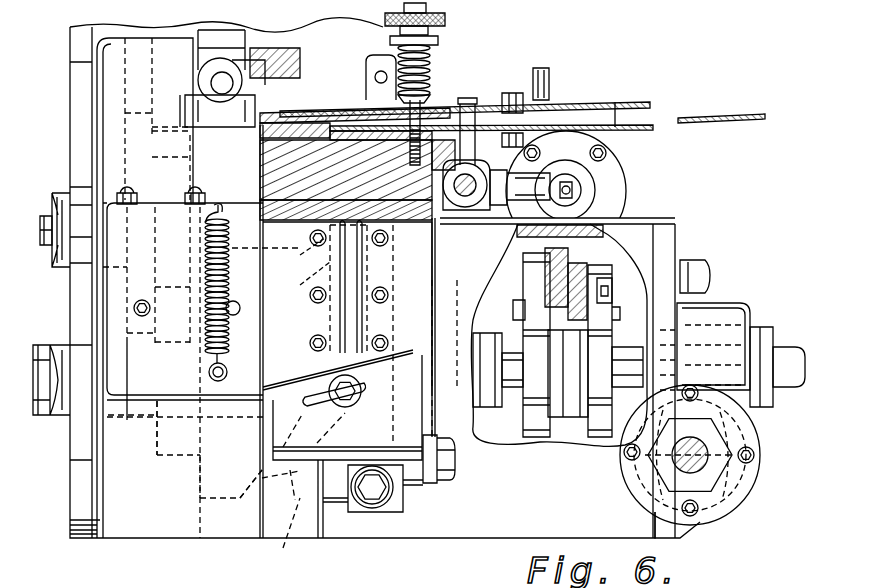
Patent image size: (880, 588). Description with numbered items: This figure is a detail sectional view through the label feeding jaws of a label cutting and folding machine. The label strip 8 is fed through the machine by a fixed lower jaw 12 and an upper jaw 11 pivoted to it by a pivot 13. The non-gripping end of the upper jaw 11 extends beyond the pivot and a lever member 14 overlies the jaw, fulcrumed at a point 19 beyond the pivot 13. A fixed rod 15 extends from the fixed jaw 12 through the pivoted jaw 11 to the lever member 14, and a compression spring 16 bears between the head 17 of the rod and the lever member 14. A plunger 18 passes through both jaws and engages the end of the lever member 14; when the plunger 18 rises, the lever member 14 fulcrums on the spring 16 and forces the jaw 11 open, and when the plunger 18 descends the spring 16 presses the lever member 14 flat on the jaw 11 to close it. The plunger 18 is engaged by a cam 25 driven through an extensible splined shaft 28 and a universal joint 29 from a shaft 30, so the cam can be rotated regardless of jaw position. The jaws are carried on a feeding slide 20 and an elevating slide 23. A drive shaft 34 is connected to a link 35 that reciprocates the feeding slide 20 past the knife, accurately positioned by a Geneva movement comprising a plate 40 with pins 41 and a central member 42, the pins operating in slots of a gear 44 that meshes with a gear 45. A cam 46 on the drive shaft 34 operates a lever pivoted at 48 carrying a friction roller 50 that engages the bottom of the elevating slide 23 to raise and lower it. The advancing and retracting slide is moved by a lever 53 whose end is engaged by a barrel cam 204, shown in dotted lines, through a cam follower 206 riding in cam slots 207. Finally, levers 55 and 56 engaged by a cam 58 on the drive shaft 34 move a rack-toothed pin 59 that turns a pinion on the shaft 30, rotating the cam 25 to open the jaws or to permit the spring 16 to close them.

The label strip 8 is at (725, 114).
The upper jaw 11 is at (640, 102).
The fixed lower jaw 12 is at (648, 131).
The pivot 13 is at (272, 148).
The lever member 14 is at (322, 114).
The fixed rod 15 is at (420, 122).
The compression spring 16 is at (433, 72).
The head 17 is at (447, 20).
The plunger 18 is at (478, 108).
The fulcrum point 19 is at (276, 90).
The feeding slide 20 is at (347, 306).
The elevating slide 23 is at (420, 266).
The cam 25 is at (505, 240).
The shaft 28 is at (530, 187).
The universal joint 29 is at (582, 203).
The shaft 30 is at (572, 188).
The drive shaft 34 is at (787, 355).
The link 35 is at (383, 72).
The plate 40 is at (205, 500).
The pins 41 is at (177, 335).
The central member 42 is at (160, 462).
The gear 44 is at (133, 350).
The gear 45 is at (152, 45).
The cam 46 is at (455, 427).
The pivot 48 is at (444, 473).
The friction roller 50 is at (388, 502).
The lever 53 is at (300, 257).
The lever 55 is at (578, 275).
The lever 56 is at (557, 303).
The cam 58 is at (512, 306).
The pin 59 is at (540, 85).
The barrel cam 204 is at (300, 498).
The cam follower 206 is at (299, 282).
The cam slots 207 is at (258, 488).